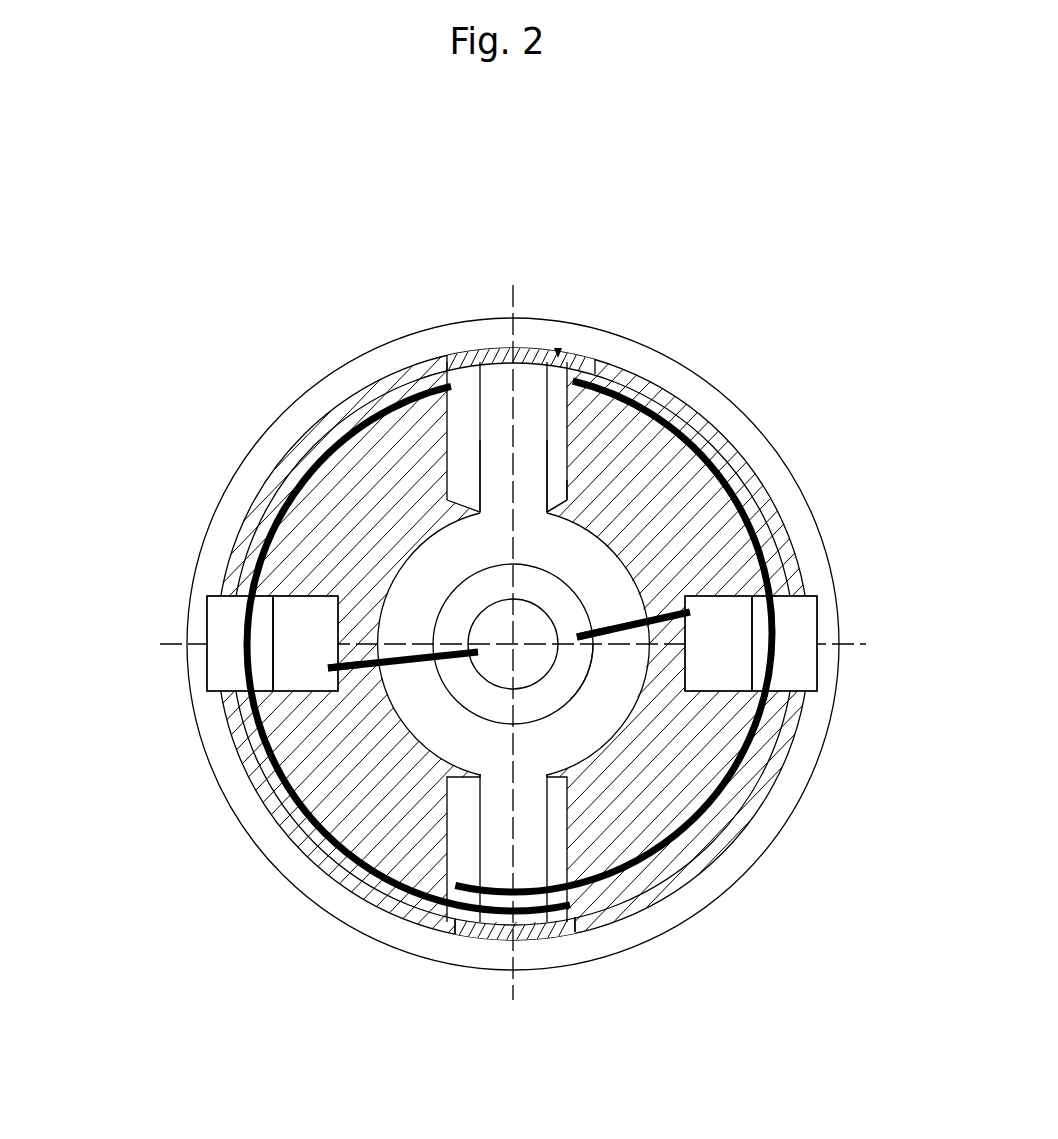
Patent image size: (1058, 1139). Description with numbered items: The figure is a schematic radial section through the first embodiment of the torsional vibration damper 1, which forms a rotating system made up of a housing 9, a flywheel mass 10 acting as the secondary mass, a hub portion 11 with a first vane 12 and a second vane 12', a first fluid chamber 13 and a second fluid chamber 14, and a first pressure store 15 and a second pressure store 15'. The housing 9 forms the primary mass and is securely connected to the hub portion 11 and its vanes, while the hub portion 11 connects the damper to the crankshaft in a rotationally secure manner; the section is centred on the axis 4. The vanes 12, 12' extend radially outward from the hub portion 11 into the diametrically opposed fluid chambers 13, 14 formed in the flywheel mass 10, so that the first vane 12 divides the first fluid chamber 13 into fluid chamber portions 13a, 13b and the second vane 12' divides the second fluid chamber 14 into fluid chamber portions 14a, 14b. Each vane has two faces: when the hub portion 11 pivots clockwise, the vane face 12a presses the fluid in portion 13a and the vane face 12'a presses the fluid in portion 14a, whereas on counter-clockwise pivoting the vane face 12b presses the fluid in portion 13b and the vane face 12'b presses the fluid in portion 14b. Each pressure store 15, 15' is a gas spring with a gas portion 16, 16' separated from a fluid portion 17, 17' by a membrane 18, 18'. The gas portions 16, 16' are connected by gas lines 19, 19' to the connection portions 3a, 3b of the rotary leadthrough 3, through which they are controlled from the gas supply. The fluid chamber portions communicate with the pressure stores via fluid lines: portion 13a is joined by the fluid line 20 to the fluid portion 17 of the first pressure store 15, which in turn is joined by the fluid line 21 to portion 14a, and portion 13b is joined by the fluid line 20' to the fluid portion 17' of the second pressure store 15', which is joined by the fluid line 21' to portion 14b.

The torsional vibration damper 1 is at (656, 224).
The rotary leadthrough 3 is at (578, 663).
The connection portion 3a is at (568, 708).
The connection portion 3b is at (597, 667).
The axis of rotation 4 is at (508, 640).
The housing 9 is at (462, 332).
The flywheel mass 10 is at (690, 522).
The hub portion 11 is at (580, 560).
The first vane 12 is at (513, 352).
The vane face 12a is at (566, 443).
The vane face 12b is at (480, 470).
The second vane 12' is at (522, 931).
The vane face 12'a is at (366, 883).
The vane face 12'b is at (595, 857).
The first fluid chamber 13 is at (558, 420).
The fluid chamber portion 13a is at (550, 462).
The fluid chamber portion 13b is at (467, 417).
The second fluid chamber 14 is at (466, 940).
The fluid chamber portion 14a is at (472, 928).
The fluid chamber portion 14b is at (550, 838).
The first pressure store 15 is at (793, 679).
The second pressure store 15' is at (216, 611).
The gas portion 16 is at (794, 619).
The gas portion 16' is at (191, 703).
The fluid portion 17 is at (827, 643).
The fluid portion 17' is at (206, 653).
The membrane 18 is at (842, 650).
The membrane 18' is at (174, 643).
The gas line 19 is at (713, 753).
The gas line 19' is at (335, 793).
The fluid line 20 is at (633, 615).
The fluid line 20' is at (386, 630).
The fluid line 21 is at (694, 792).
The fluid line 21' is at (239, 765).